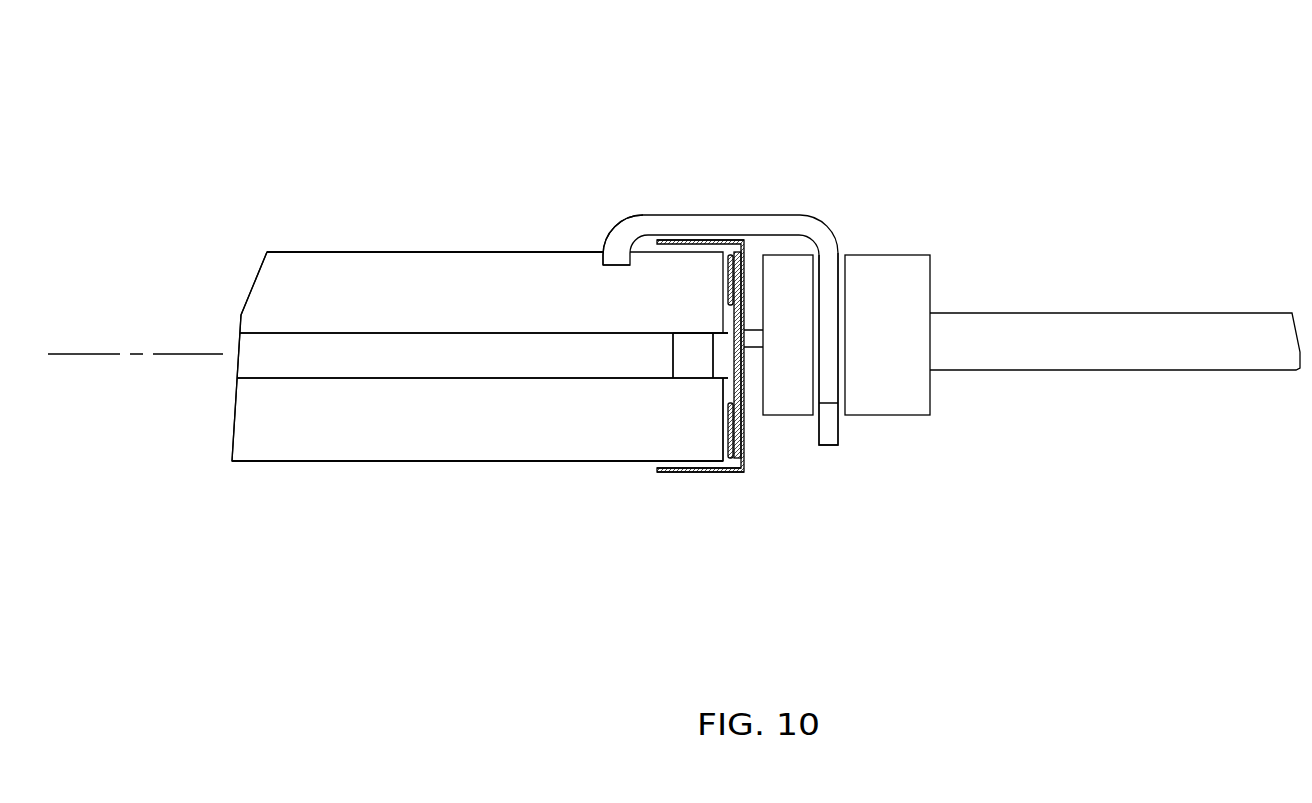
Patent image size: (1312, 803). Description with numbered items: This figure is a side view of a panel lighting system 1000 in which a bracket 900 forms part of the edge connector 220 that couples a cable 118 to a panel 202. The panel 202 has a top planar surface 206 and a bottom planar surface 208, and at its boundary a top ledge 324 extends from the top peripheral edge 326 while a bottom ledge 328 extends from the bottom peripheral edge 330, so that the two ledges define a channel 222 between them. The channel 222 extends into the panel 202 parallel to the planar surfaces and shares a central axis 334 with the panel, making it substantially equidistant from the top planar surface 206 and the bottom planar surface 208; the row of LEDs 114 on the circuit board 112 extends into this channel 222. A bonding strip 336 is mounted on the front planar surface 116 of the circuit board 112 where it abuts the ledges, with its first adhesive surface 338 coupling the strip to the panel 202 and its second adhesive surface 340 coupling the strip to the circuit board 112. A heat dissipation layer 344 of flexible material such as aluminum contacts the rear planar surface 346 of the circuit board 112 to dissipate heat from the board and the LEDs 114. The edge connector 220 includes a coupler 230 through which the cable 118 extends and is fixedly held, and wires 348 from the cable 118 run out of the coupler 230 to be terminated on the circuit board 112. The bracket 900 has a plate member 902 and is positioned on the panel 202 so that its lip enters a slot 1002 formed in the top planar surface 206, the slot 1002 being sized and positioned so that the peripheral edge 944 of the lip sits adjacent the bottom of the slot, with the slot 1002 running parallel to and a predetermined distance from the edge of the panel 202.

The panel lighting system 1000 is at (270, 98).
The panel 202 is at (350, 512).
The top planar surface 206 is at (300, 252).
The bottom planar surface 208 is at (293, 462).
The channel 222 is at (270, 355).
The top ledge 324 is at (280, 297).
The top peripheral edge 326 is at (363, 252).
The bottom ledge 328 is at (280, 425).
The bottom peripheral edge 330 is at (365, 461).
The central axis 334 is at (88, 353).
The first adhesive surface 338 is at (723, 432).
The LEDs 114 is at (707, 333).
The front planar surface 116 is at (722, 322).
The slot 1002 is at (615, 266).
The peripheral edge 944 is at (632, 264).
The bracket 900 is at (722, 214).
The plate member 902 is at (605, 240).
The heat dissipation layer 344 is at (675, 240).
The bonding strip 336 is at (728, 450).
The second adhesive surface 340 is at (743, 350).
The rear planar surface 346 is at (745, 400).
The edge connector 220 is at (885, 192).
The circuit board 112 is at (735, 258).
The wires 348 is at (779, 353).
The coupler 230 is at (930, 254).
The cable 118 is at (1042, 365).